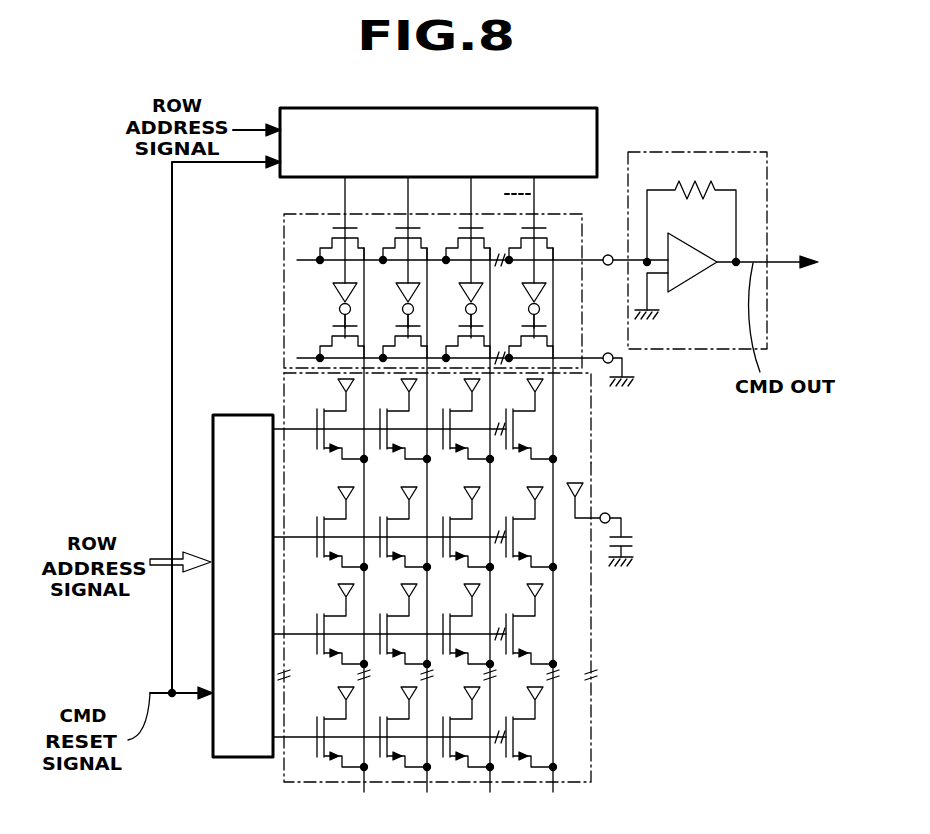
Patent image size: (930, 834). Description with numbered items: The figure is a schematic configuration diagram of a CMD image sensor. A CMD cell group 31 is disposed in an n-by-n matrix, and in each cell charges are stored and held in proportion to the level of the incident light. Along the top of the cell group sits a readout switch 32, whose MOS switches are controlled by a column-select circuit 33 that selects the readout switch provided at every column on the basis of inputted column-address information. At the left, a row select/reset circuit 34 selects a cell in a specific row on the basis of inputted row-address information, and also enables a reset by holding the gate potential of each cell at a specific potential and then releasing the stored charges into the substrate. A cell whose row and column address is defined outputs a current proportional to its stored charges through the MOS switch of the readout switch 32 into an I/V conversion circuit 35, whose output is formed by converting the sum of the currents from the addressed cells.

The CMD cell group 31 is at (592, 463).
The readout switch 32 is at (285, 272).
The column-select circuit 33 is at (597, 131).
The row select/reset circuit 34 is at (237, 414).
The I/V conversion circuit 35 is at (690, 349).